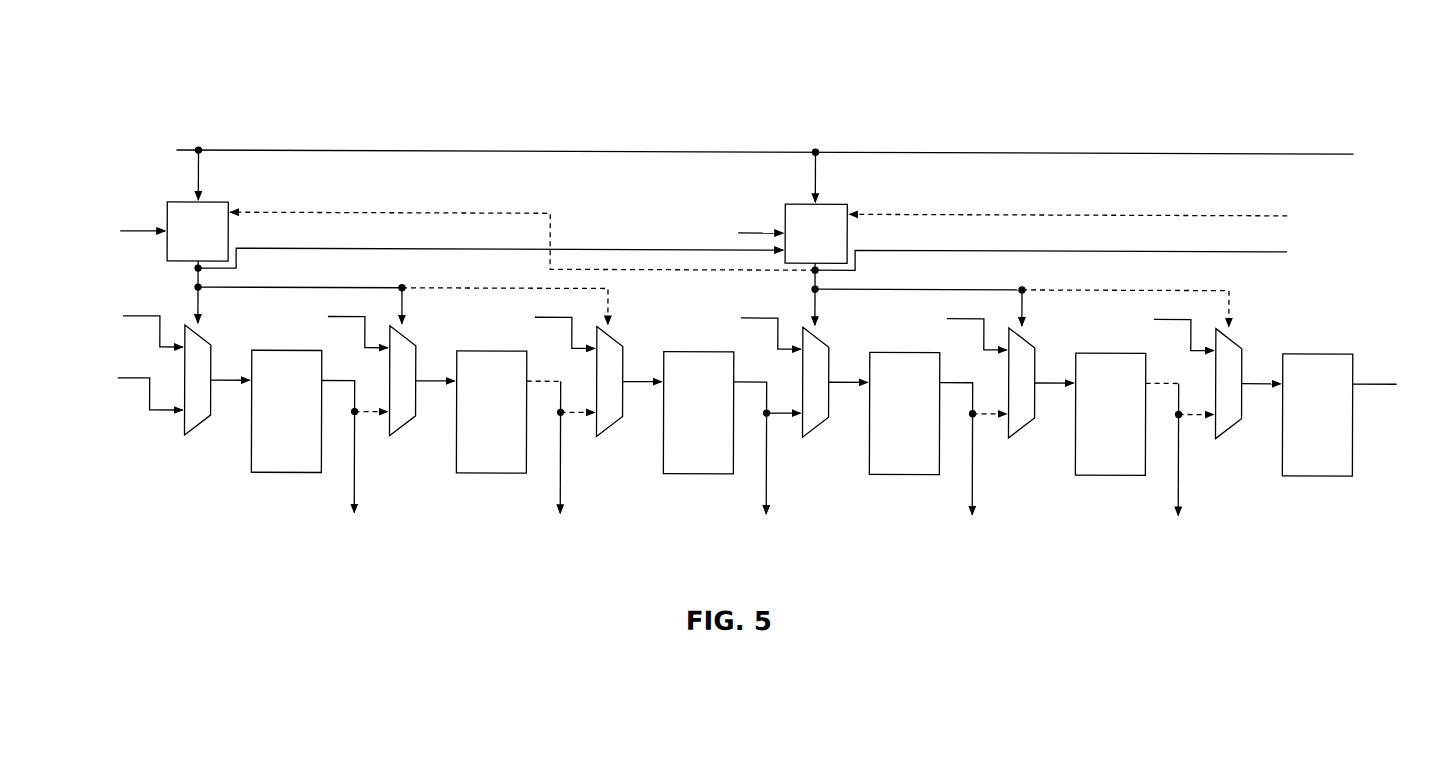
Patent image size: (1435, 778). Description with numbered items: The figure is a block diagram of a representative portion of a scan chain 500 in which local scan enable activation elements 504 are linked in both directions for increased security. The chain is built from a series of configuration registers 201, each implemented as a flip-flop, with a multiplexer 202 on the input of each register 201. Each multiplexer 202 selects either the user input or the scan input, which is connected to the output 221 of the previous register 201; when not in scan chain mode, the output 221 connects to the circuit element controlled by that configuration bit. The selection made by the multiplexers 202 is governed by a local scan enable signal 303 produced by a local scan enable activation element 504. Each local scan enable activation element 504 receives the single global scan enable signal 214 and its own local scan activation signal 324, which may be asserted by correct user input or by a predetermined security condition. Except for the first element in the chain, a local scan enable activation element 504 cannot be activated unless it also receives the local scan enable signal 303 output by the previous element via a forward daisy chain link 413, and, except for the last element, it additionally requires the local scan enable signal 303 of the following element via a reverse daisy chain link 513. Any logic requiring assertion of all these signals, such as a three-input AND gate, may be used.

The scan chain 500 is at (175, 70).
The scan enable signal 214 is at (185, 150).
The local scan enable activation element 504 is at (222, 202).
The local scan activation signal 324 is at (133, 237).
The reverse daisy chain link 513 is at (525, 211).
The forward daisy chain link 413 is at (572, 248).
The local scan enable signal 303 is at (352, 287).
The multiplexer 202 is at (197, 426).
The configuration register 201 is at (285, 473).
The output 221 is at (358, 478).